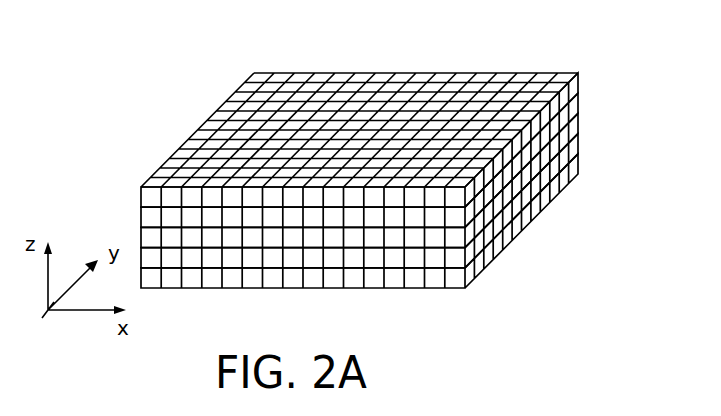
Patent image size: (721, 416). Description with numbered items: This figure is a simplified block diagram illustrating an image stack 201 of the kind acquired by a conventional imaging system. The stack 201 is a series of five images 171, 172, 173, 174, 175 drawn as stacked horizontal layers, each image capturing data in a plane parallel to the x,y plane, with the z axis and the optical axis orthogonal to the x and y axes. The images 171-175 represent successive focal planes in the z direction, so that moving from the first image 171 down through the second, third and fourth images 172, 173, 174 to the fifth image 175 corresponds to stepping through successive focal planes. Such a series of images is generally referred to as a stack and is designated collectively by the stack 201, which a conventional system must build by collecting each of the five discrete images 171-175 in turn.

The stack of images 201 is at (183, 83).
The image 171 is at (580, 83).
The image 172 is at (582, 103).
The image 173 is at (581, 123).
The image 174 is at (582, 143).
The image 175 is at (582, 167).